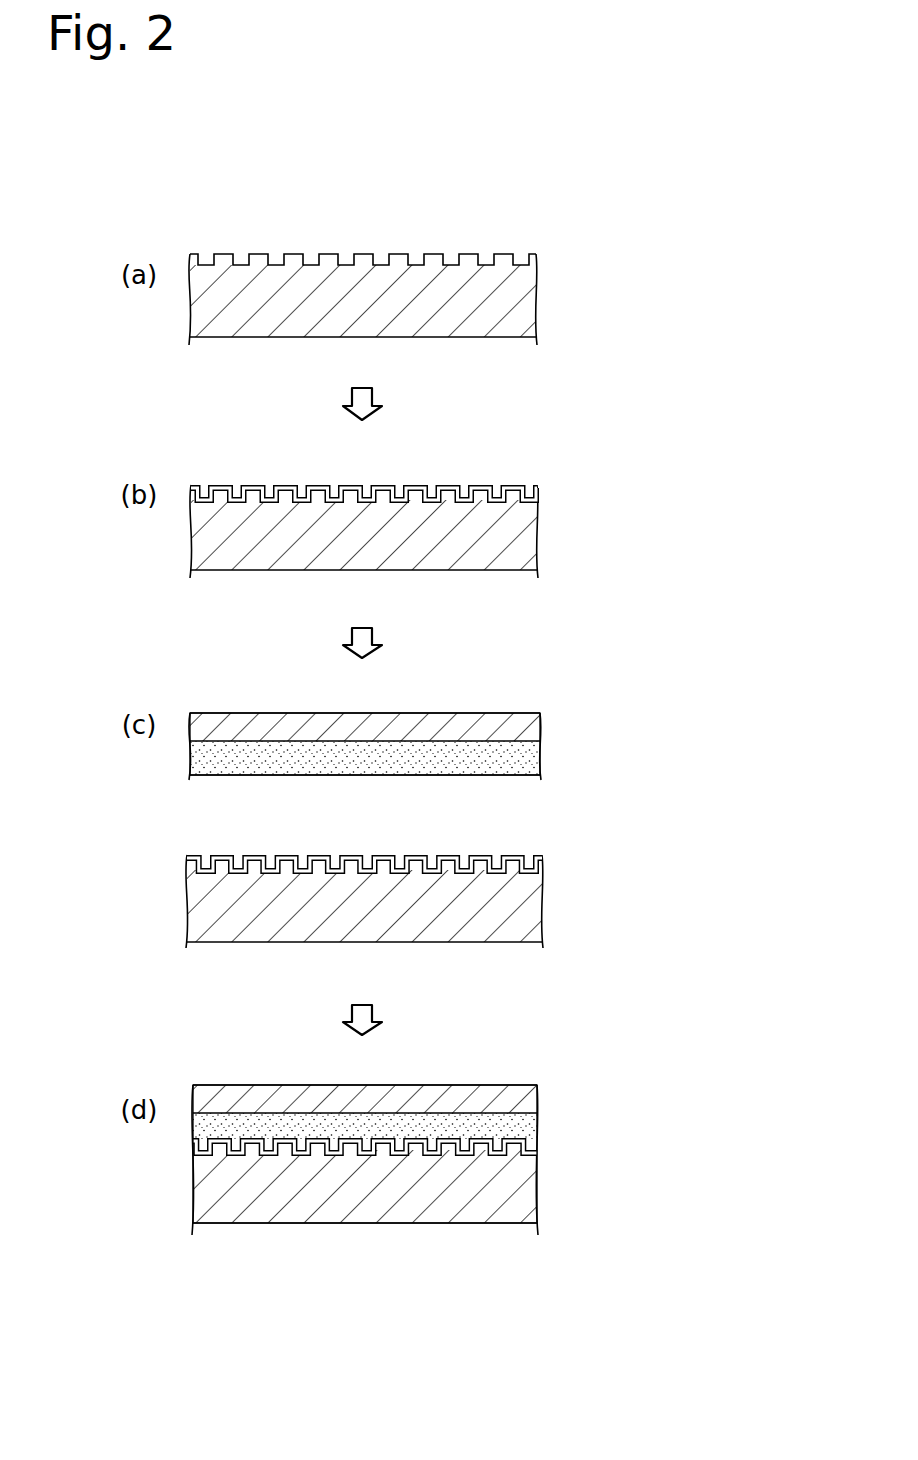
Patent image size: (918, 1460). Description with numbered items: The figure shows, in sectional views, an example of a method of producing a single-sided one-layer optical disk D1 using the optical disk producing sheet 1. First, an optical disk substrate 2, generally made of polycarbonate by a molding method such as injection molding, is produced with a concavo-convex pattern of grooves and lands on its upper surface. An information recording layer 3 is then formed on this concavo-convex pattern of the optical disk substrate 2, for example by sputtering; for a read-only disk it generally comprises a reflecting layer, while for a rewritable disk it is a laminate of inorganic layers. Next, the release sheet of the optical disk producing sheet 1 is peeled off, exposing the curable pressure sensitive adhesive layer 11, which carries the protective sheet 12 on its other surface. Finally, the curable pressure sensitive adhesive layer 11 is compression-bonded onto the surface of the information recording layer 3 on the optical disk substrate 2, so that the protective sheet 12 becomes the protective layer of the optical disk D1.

The optical disk producing sheet 1 is at (240, 703).
The optical disk substrate 2 is at (527, 312).
The information recording layer 3 is at (473, 487).
The curable pressure sensitive adhesive layer 11 is at (537, 763).
The protective sheet 12 is at (508, 715).
The optical disk D1 is at (242, 1249).